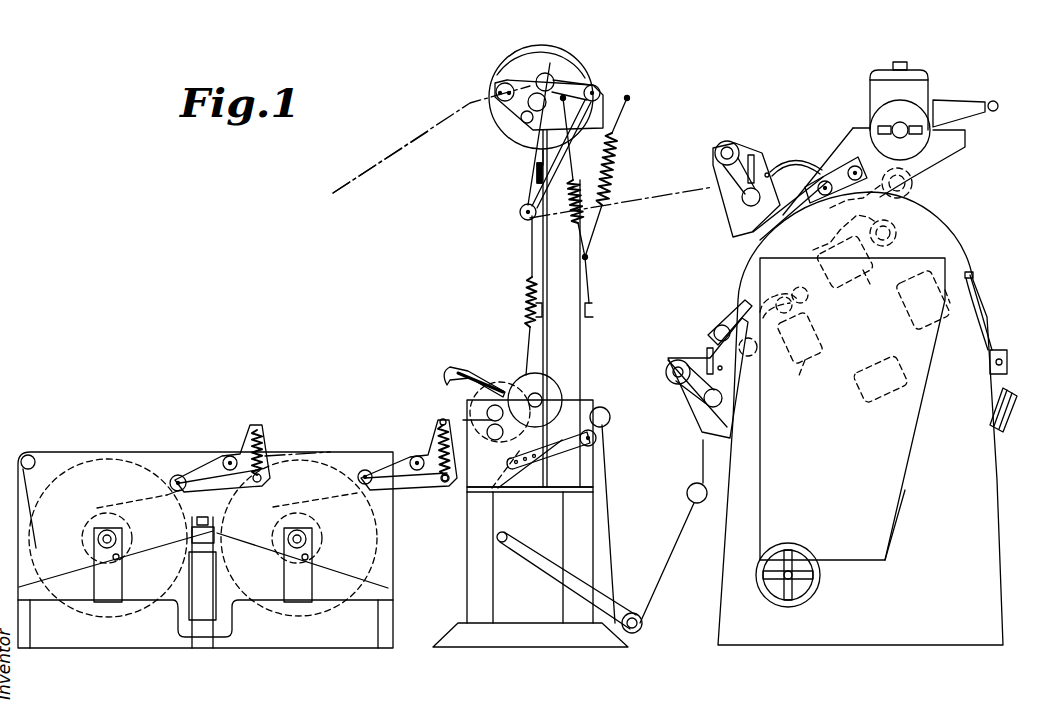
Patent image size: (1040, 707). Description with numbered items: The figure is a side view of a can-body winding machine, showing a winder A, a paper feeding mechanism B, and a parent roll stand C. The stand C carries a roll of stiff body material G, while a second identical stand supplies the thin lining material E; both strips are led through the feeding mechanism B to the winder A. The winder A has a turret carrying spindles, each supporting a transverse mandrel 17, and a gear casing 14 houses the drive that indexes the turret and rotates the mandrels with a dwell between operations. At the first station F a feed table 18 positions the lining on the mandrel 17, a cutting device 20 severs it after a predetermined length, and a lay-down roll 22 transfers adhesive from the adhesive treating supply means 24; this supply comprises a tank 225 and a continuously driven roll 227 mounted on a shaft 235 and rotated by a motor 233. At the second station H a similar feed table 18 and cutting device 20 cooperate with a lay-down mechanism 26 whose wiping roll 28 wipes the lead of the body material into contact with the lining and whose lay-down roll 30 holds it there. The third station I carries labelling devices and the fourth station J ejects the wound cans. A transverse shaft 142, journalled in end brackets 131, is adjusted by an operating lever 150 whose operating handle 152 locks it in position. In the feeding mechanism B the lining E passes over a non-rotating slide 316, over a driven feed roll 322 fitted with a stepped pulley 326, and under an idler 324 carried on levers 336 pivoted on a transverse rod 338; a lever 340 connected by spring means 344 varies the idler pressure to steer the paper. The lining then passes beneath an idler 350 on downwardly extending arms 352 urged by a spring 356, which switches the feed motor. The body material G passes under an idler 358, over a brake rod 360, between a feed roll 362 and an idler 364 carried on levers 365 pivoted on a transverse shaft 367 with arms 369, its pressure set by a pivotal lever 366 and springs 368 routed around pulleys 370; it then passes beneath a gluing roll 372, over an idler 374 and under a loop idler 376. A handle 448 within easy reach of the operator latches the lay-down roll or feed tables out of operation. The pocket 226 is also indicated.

The winder A is at (860, 418).
The paper feeding mechanism B is at (540, 58).
The parent roll stand C is at (197, 452).
The lining material E is at (395, 155).
The first station F is at (820, 247).
The body material G is at (660, 590).
The second station H is at (796, 379).
The third station I is at (886, 398).
The fourth station J is at (947, 303).
The gear casing 14 is at (905, 527).
The mandrel 17 is at (898, 284).
The feed table 18 is at (798, 163).
The cutting device 20 is at (868, 160).
The lay-down roll 22 is at (893, 228).
The adhesive treating supply means 24 is at (948, 147).
The lay-down mechanism 26 is at (779, 293).
The wiping roll 28 is at (809, 296).
The lay-down roll 30 is at (792, 306).
The end bracket 131 is at (740, 222).
The shaft 142 is at (727, 141).
The operating lever 150 is at (742, 158).
The operating handle 152 is at (743, 197).
The tank 225 is at (972, 100).
The pocket 226 is at (805, 360).
The continuously driven roll 227 is at (917, 113).
The motor 233 is at (896, 70).
The shaft 235 is at (893, 125).
The slide 316 is at (497, 90).
The feed roll 322 is at (533, 104).
The idler 324 is at (552, 75).
The stepped pulley 326 is at (510, 67).
The lever 336 is at (575, 78).
The transverse rod 338 is at (600, 92).
The lever 340 is at (593, 306).
The spring means 344 is at (584, 222).
The idler 350 is at (520, 212).
The downwardly extending arms 352 is at (545, 157).
The spring 356 is at (612, 160).
The idler 358 is at (447, 482).
The brake rod 360 is at (441, 425).
The feed roll 362 is at (490, 406).
The idler 364 is at (510, 463).
The lever 365 is at (553, 452).
The pivotal lever 366 is at (535, 318).
The transverse shaft 367 is at (597, 438).
The spring 368 is at (528, 303).
The downwardly extending arm 369 is at (492, 489).
The pulley 370 is at (537, 176).
The gluing roll 372 is at (553, 388).
The idler 374 is at (600, 407).
The idler 376 is at (637, 631).
The handle 448 is at (992, 410).